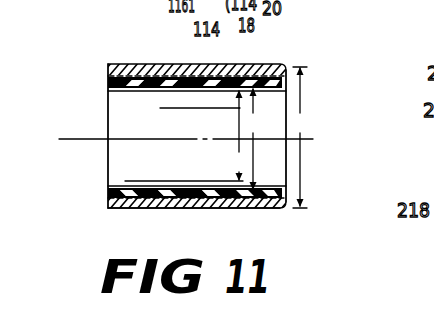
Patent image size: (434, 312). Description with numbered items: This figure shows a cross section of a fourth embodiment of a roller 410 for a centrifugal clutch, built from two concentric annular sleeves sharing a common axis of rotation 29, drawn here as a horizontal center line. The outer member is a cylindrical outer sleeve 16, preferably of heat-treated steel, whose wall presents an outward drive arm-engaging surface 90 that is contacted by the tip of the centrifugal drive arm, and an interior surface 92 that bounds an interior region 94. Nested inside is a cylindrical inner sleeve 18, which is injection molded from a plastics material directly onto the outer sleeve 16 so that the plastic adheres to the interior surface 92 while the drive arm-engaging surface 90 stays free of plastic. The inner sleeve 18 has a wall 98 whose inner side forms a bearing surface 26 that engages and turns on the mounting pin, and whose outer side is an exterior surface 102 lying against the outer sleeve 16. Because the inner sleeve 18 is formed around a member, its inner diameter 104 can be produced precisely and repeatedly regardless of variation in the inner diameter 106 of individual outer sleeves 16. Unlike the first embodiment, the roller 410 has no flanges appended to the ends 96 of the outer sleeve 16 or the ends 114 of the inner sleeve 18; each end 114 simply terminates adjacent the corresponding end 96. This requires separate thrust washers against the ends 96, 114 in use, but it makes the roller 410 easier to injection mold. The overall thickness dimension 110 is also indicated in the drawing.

The roller 410 is at (105, 48).
The cylindrical outer sleeve 16 is at (148, 67).
The cylindrical inner sleeve 18 is at (197, 92).
The bearing surface 26 is at (189, 189).
The axis of rotation 29 is at (75, 137).
The drive arm-engaging surface 90 is at (156, 215).
The interior surface 92 is at (145, 93).
The interior region 94 is at (200, 113).
The ends of cylindrical outer sleeve 96 is at (107, 69).
The wall of cylindrical inner sleeve 98 is at (163, 165).
The exterior surface 102 is at (194, 202).
The inner diameter of cylindrical inner sleeve 104 is at (186, 144).
The inner diameter of cylindrical outer sleeve 106 is at (257, 139).
The overall thickness dimension 110 is at (302, 137).
The ends of cylindrical inner sleeve 114 is at (107, 83).